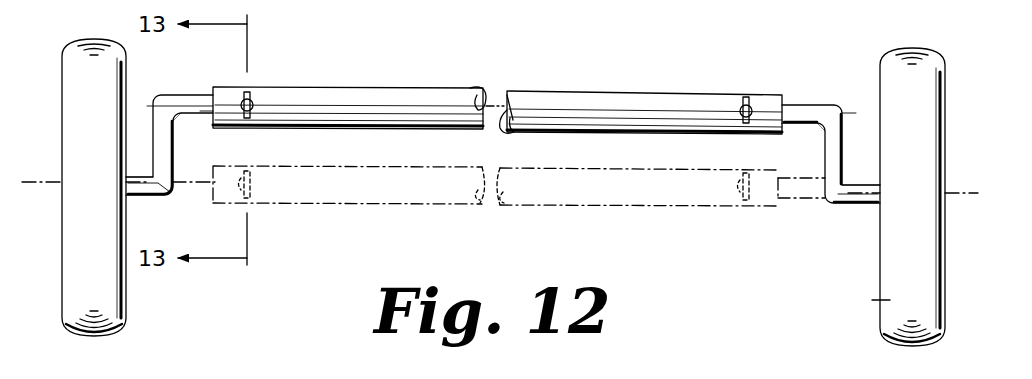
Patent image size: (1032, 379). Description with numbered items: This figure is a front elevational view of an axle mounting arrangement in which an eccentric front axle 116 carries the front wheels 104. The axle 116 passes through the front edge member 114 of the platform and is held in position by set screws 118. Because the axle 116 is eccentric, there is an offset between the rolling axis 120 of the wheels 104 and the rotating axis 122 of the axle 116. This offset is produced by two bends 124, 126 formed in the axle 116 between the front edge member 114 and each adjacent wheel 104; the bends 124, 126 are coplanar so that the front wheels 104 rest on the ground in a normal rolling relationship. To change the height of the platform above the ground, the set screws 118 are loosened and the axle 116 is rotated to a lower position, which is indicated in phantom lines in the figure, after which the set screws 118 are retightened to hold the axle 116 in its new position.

The front wheel 104 is at (113, 305).
The front edge member 114 is at (388, 96).
The eccentric front axle 116 is at (203, 95).
The set screw 118 is at (250, 96).
The rolling axis 120 is at (52, 183).
The rotating axis 122 is at (505, 94).
The bend 124 is at (177, 120).
The bend 126 is at (150, 176).